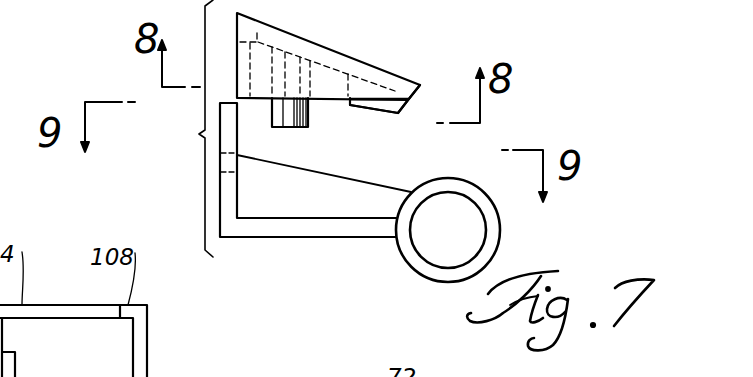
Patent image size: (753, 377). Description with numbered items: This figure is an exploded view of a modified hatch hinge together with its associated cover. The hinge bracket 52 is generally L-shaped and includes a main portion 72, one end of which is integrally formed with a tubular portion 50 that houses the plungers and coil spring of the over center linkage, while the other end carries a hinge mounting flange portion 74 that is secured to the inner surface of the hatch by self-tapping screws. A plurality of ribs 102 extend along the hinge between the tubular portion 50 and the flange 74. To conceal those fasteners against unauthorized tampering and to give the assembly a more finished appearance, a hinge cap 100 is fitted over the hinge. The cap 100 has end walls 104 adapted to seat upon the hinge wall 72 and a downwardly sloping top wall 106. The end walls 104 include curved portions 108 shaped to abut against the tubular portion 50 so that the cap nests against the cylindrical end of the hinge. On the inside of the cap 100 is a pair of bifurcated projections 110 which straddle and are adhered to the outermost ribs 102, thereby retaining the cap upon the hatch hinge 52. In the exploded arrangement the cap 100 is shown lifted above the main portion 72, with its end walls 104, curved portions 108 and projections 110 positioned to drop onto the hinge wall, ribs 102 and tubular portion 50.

The tubular portion 50 is at (500, 232).
The hinge bracket 52 is at (338, 237).
The main portion 72 is at (291, 238).
The hinge mounting flange portion 74 is at (230, 132).
The hinge cap 100 is at (350, 57).
The ribs 102 is at (320, 197).
The end walls 104 is at (367, 88).
The downwardly sloping top wall 106 is at (265, 23).
The curved portions 108 is at (407, 110).
The bifurcated projections 110 is at (380, 103).